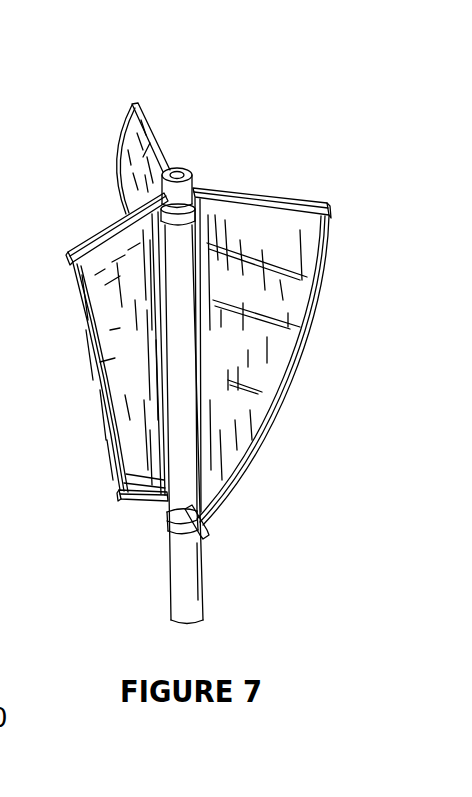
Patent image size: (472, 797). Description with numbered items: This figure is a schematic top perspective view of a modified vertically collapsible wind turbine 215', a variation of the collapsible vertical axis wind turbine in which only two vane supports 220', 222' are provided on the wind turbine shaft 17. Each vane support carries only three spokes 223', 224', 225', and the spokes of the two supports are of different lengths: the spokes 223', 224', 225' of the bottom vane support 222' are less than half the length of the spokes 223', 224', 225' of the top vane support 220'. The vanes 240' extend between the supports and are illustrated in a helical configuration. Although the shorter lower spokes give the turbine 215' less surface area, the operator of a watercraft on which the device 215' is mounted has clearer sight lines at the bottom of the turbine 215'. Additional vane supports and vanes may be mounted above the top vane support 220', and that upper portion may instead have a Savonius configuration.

The modified vertically collapsible wind turbine 215' is at (213, 319).
The top vane support 220' is at (226, 134).
The bottom vane support 222' is at (123, 561).
The spoke 223' is at (236, 291).
The spoke 224' is at (203, 345).
The spoke 225' is at (104, 215).
The vane 240' is at (186, 314).
The wind turbine shaft 17 is at (183, 567).